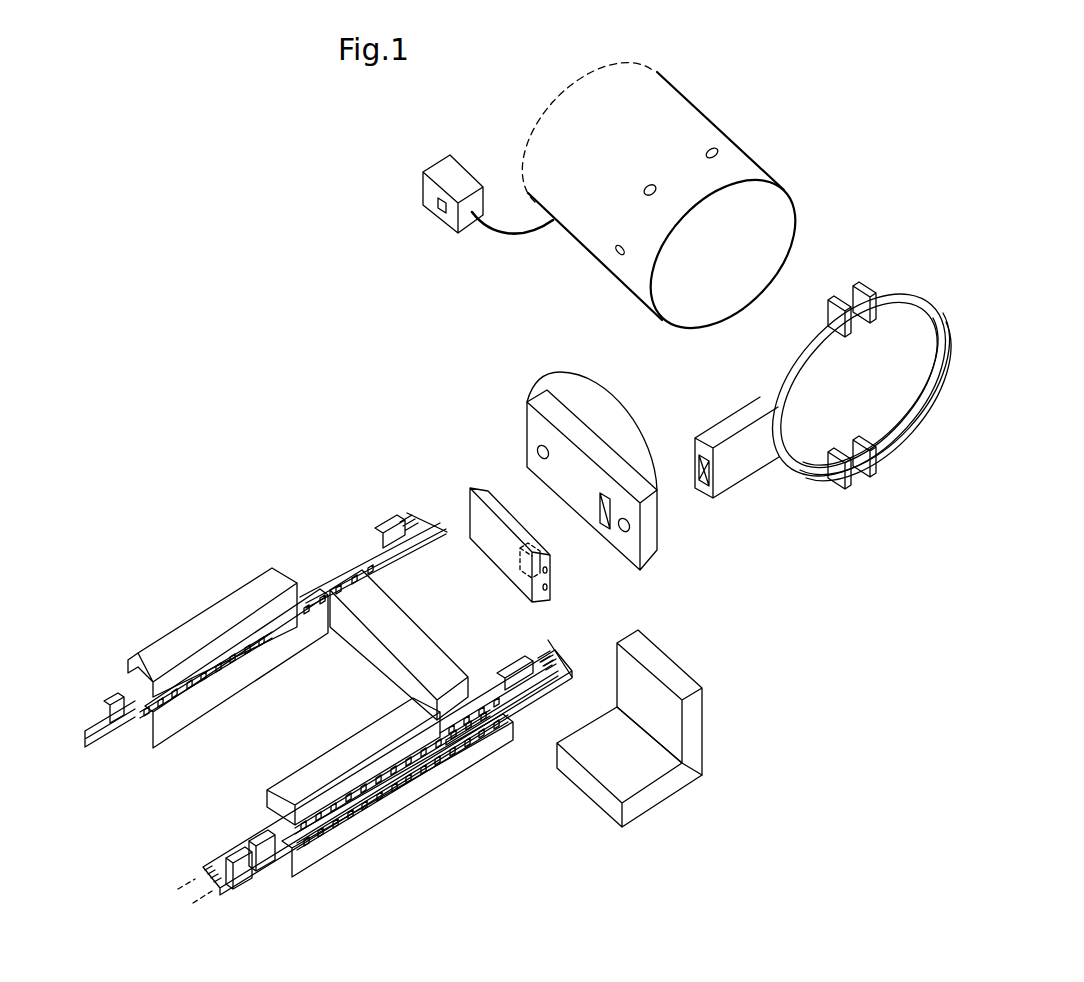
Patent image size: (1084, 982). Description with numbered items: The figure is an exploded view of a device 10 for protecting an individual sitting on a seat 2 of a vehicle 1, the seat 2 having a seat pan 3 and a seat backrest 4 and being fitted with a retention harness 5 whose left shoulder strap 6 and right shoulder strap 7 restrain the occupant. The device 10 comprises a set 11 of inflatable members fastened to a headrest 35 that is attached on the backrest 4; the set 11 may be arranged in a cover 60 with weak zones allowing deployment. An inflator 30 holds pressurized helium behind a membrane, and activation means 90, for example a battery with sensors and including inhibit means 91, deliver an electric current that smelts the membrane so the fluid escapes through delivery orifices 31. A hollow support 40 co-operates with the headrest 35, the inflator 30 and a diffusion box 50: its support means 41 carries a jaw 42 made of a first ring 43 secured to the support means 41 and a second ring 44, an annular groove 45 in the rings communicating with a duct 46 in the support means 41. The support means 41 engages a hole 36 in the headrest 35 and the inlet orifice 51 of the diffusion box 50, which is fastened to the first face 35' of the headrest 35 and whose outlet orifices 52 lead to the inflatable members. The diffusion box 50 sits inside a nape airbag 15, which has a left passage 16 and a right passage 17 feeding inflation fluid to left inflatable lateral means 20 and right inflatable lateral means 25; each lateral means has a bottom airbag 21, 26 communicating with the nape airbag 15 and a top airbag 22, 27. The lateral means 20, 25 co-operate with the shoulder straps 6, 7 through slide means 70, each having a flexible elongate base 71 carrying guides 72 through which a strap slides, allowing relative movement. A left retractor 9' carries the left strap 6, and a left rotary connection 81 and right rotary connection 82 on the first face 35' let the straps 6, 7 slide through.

The vehicle 1 is at (840, 645).
The seat 2 is at (767, 722).
The seat pan 3 is at (655, 822).
The seat backrest 4 is at (657, 755).
The retention harness 5 is at (580, 638).
The left shoulder strap 6 is at (207, 860).
The right shoulder strap 7 is at (125, 692).
The left retractor 9' is at (703, 572).
The device 10 is at (300, 305).
The set of inflatable members 11 is at (218, 563).
The nape airbag 15 is at (402, 628).
The left passage 16 is at (487, 680).
The right passage 17 is at (330, 548).
The left inflatable lateral means 20 is at (356, 790).
The bottom airbag 21 is at (400, 818).
The top airbag 22 is at (345, 740).
The right inflatable lateral means 25 is at (228, 623).
The bottom airbag 26 is at (258, 682).
The top airbag 27 is at (208, 622).
The inflator 30 is at (573, 222).
The delivery orifices 31 is at (618, 256).
The headrest 35 is at (607, 494).
The first face 35' is at (506, 464).
The hole 36 is at (598, 508).
The hollow support 40 is at (818, 434).
The support means 41 is at (715, 430).
The jaw 42 is at (868, 515).
The first ring 43 is at (812, 475).
The second ring 44 is at (918, 438).
The annular groove 45 is at (857, 318).
The duct 46 is at (698, 468).
The diffusion box 50 is at (468, 497).
The inlet orifice 51 is at (556, 548).
The outlet orifices 52 is at (550, 592).
The cover 60 is at (330, 470).
The slide means 70 is at (585, 658).
The elongate base 71 is at (487, 745).
The guides 72 is at (470, 762).
The left rotary connection 81 is at (623, 534).
The right rotary connection 82 is at (537, 452).
The activation means 90 is at (460, 237).
The inhibit means 91 is at (437, 208).